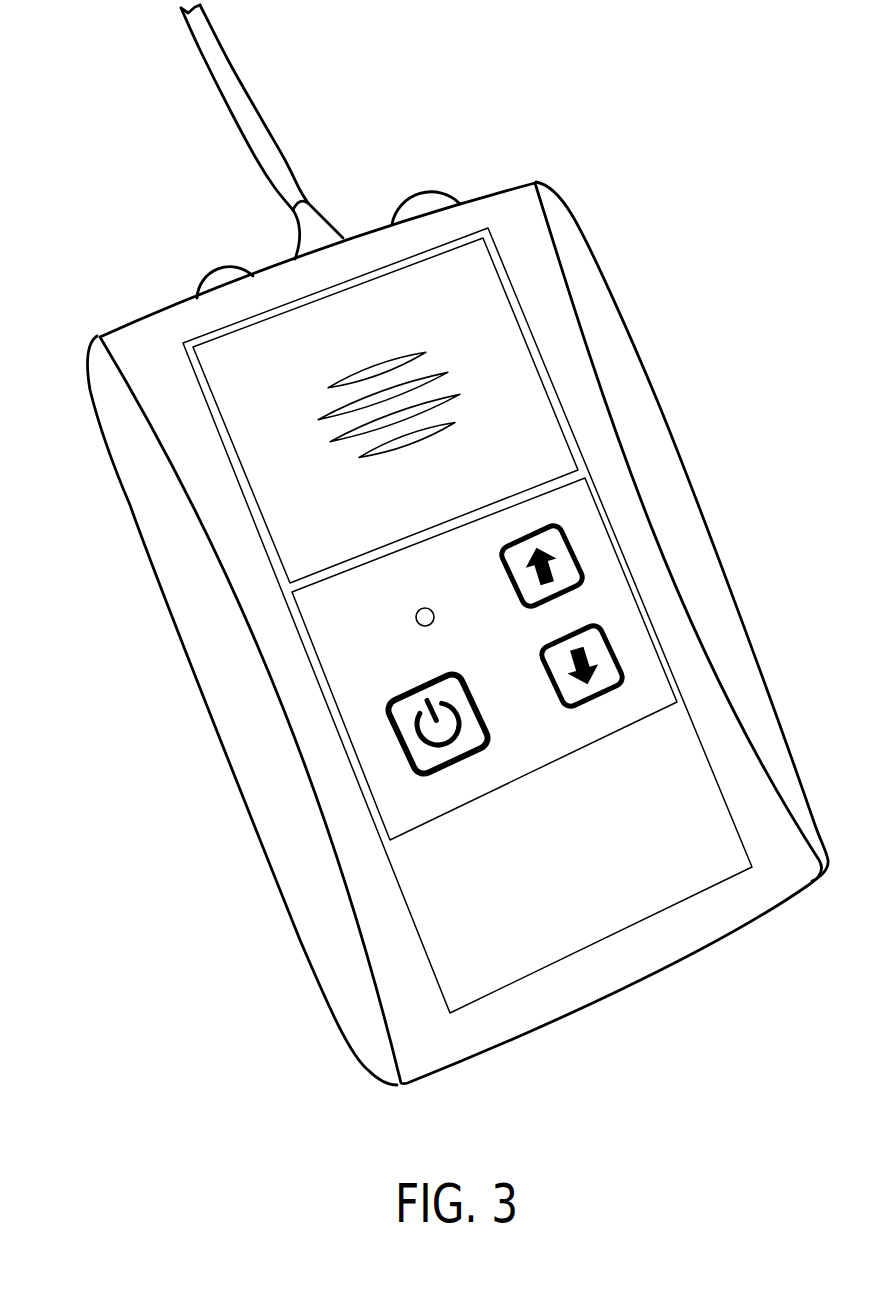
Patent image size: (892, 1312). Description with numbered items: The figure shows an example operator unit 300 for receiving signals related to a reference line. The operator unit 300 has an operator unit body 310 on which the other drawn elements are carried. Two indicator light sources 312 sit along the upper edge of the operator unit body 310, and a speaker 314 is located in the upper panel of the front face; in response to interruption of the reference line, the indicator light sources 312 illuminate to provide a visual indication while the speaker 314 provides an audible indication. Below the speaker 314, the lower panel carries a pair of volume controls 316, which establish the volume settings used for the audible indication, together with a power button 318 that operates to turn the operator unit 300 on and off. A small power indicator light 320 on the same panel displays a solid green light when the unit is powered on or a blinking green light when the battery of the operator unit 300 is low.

The operator unit 300 is at (525, 78).
The operator unit body 310 is at (582, 232).
The indicator light sources 312 is at (427, 192).
The speaker 314 is at (437, 363).
The volume controls 316 is at (607, 662).
The power button 318 is at (403, 715).
The power indicator light 320 is at (416, 617).